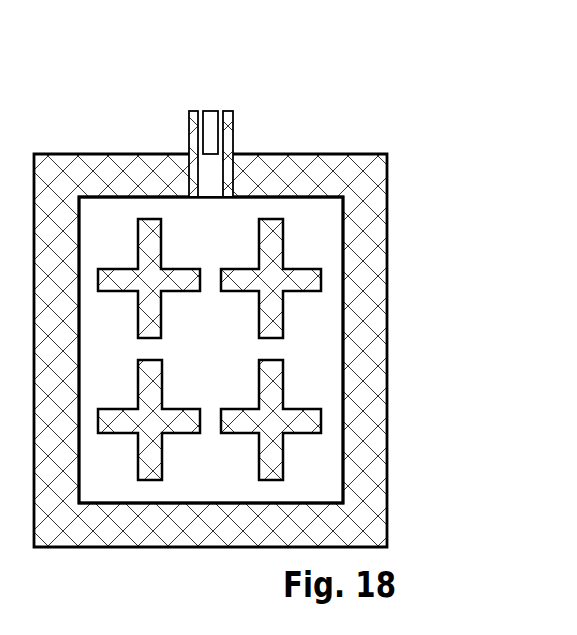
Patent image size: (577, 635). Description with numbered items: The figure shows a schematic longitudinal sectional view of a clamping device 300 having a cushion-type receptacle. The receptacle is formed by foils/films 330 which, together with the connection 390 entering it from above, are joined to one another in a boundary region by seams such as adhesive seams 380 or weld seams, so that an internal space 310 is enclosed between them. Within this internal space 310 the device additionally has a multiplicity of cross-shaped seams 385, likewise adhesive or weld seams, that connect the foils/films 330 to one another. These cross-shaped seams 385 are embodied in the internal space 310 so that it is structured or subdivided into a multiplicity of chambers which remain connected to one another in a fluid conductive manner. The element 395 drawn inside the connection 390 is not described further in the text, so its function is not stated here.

The clamping device 300 is at (192, 33).
The internal space 310 is at (128, 357).
The foils/films 330 is at (263, 154).
The adhesive seams 380 is at (118, 154).
The cross-shaped seams 385 is at (175, 291).
The connection 390 is at (195, 111).
The sensor rod 395 is at (213, 111).